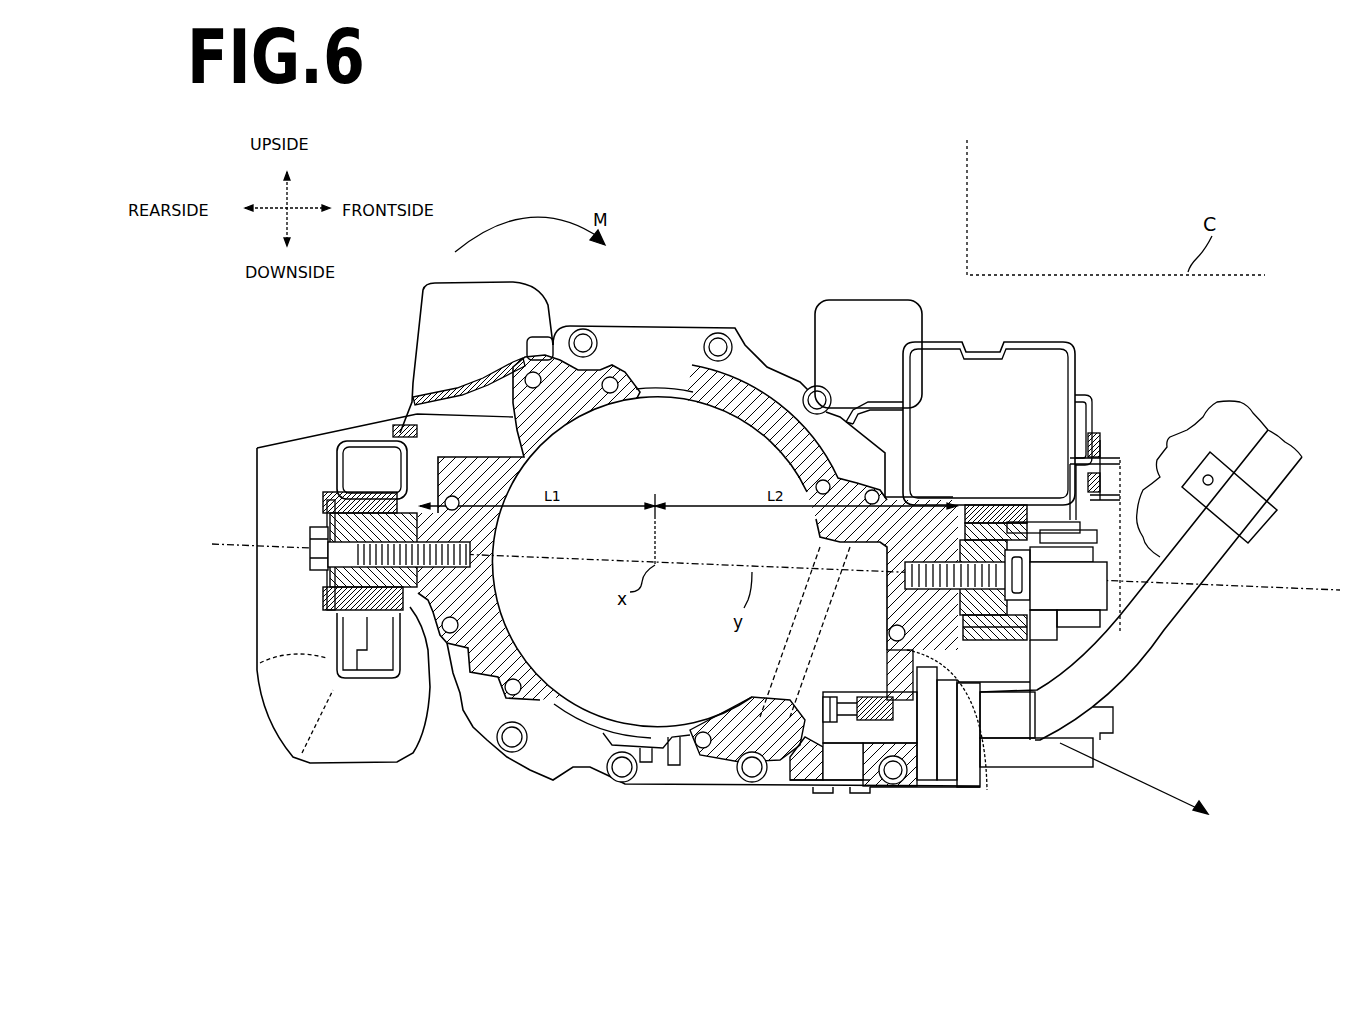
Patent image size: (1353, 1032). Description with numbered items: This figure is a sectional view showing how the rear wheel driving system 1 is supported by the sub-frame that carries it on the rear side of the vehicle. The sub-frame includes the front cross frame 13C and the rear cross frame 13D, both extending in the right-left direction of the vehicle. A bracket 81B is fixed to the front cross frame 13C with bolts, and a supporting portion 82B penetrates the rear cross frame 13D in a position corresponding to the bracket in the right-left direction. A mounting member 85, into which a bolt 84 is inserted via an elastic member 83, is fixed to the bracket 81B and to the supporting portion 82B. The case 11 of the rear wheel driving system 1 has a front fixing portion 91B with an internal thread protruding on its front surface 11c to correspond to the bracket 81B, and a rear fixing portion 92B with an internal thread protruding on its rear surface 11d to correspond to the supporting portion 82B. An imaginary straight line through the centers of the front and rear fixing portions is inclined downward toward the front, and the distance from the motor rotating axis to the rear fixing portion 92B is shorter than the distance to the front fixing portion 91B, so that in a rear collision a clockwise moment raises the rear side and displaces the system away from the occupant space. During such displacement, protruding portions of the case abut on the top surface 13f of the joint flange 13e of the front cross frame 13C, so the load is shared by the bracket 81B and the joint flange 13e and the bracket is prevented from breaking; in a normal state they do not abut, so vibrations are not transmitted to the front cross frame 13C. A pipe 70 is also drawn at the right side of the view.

The rear wheel driving system 1 is at (600, 323).
The case 11 is at (777, 400).
The front surface 11c is at (975, 700).
The rear surface 11d is at (437, 468).
The front cross frame 13C is at (1076, 372).
The rear cross frame 13D is at (352, 442).
The joint flange 13e is at (870, 407).
The top surface 13f is at (883, 407).
The exhaust pipe 70 is at (1060, 580).
The bracket 81B is at (995, 627).
The supporting portion 82B is at (387, 620).
The elastic member 83 is at (323, 613).
The bolt 84 is at (315, 530).
The mounting member 85 is at (323, 580).
The front fixing portion 91B is at (958, 540).
The rear fixing portion 92B is at (395, 690).